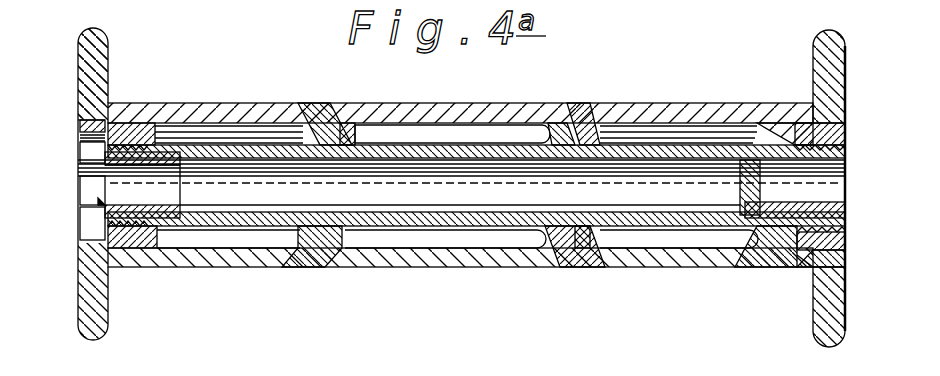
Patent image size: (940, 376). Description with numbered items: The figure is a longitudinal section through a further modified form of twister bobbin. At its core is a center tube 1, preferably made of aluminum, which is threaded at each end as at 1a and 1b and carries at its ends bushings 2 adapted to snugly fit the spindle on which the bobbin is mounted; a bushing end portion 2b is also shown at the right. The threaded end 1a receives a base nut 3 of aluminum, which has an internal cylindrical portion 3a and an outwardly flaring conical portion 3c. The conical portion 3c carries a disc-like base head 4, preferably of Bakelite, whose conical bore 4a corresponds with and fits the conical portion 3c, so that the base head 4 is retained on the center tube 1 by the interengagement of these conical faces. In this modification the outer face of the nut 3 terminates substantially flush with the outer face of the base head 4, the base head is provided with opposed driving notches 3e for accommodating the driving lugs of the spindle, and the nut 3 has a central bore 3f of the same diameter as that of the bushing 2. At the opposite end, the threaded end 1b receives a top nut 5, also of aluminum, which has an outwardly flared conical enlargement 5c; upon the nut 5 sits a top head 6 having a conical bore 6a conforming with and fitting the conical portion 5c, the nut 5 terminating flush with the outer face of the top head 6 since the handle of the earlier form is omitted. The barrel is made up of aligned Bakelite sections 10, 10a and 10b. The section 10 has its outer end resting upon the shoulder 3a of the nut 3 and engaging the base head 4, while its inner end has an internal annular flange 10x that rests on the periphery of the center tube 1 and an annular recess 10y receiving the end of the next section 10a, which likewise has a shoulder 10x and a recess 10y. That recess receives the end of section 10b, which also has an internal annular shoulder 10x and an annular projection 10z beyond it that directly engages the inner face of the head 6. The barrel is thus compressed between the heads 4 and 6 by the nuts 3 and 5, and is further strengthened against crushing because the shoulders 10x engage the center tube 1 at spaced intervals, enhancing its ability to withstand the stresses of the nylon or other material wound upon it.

The center tube 1 is at (478, 203).
The threaded end 1a is at (150, 240).
The threaded end 1b is at (832, 240).
The bushing 2 is at (828, 211).
The sleeve end portion 2b is at (834, 192).
The base nut 3 is at (120, 242).
The internal cylindrical portion 3a is at (140, 125).
The conical portion 3c is at (83, 121).
The driving notches 3e is at (86, 146).
The central bore 3f is at (96, 202).
The base head 4 is at (85, 44).
The conical bore 4a is at (85, 112).
The top nut 5 is at (847, 132).
The conical enlargement 5c is at (846, 116).
The top head 6 is at (824, 58).
The conical bore 6a is at (822, 268).
The barrel section 10 is at (238, 104).
The barrel section 10a is at (508, 86).
The barrel section 10b is at (716, 84).
The internal annular flange 10x is at (345, 124).
The annular recess 10y is at (352, 78).
The annular projection 10z is at (800, 268).